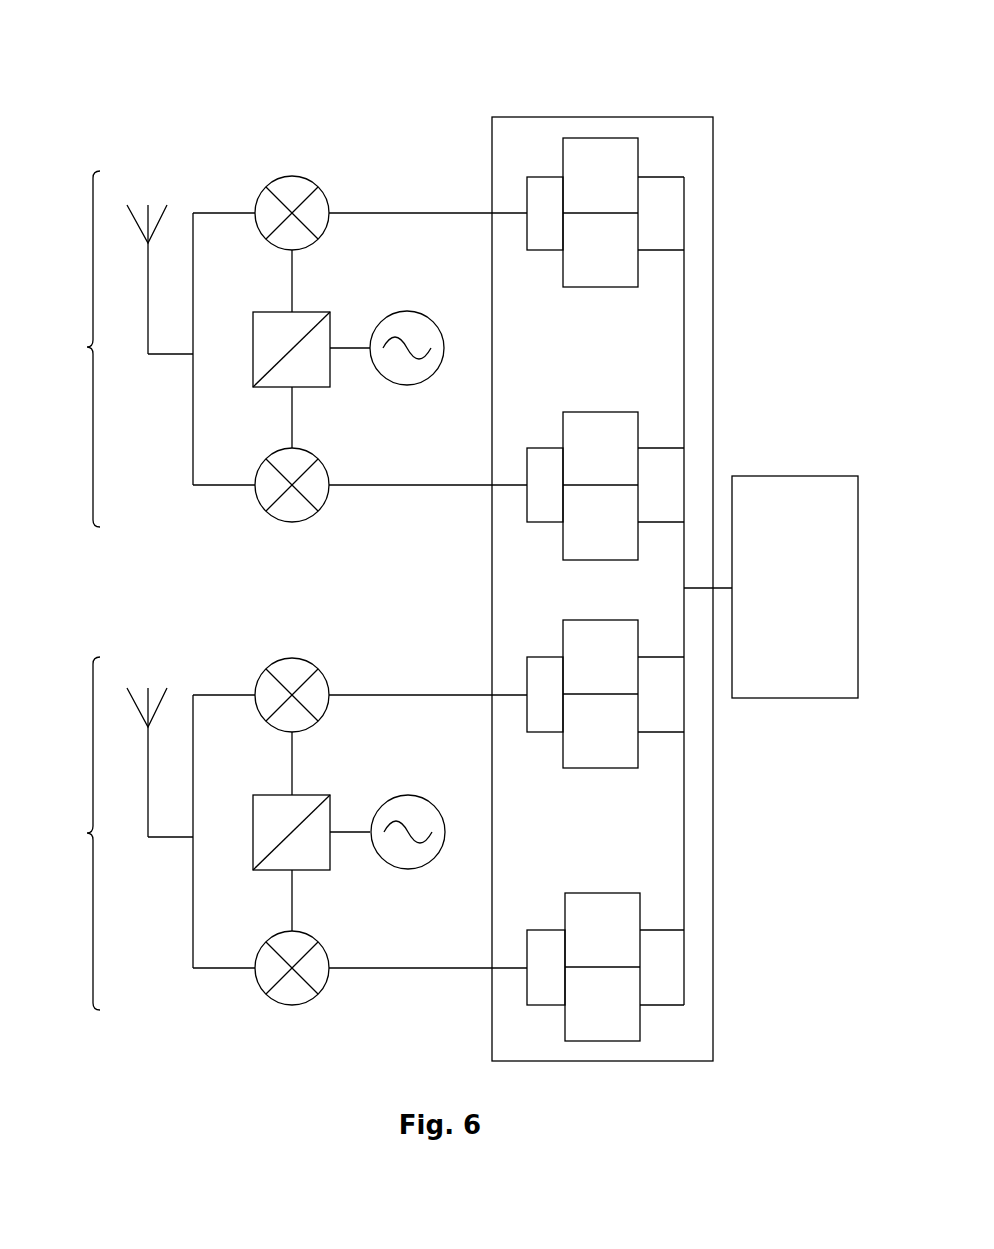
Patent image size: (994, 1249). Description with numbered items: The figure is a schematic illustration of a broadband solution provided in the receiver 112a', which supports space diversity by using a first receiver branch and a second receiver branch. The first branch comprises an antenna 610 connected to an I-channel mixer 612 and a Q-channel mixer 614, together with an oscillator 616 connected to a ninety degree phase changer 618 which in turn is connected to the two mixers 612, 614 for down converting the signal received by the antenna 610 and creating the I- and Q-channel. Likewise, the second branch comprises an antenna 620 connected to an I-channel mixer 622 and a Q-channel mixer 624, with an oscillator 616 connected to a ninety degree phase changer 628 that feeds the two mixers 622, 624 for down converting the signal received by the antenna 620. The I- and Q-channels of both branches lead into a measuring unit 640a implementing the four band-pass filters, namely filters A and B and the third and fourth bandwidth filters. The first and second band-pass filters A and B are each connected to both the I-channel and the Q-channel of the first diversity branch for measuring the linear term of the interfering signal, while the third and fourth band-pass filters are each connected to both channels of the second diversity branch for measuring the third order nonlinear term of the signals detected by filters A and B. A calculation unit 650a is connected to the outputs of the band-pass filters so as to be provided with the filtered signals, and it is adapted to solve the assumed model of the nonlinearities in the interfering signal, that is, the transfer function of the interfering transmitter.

The receiver 112a' is at (456, 534).
The antenna 610 is at (168, 354).
The I-channel mixer 612 is at (307, 238).
The Q-channel mixer 614 is at (305, 457).
The oscillator 616 is at (408, 377).
The 90° phase changer 618 is at (278, 382).
The antenna 620 is at (168, 837).
The I-channel mixer 622 is at (305, 730).
The Q-channel mixer 624 is at (305, 940).
The 90° phase changer 628 is at (278, 863).
The measuring unit 640a is at (652, 122).
The calculation unit 650a is at (795, 587).